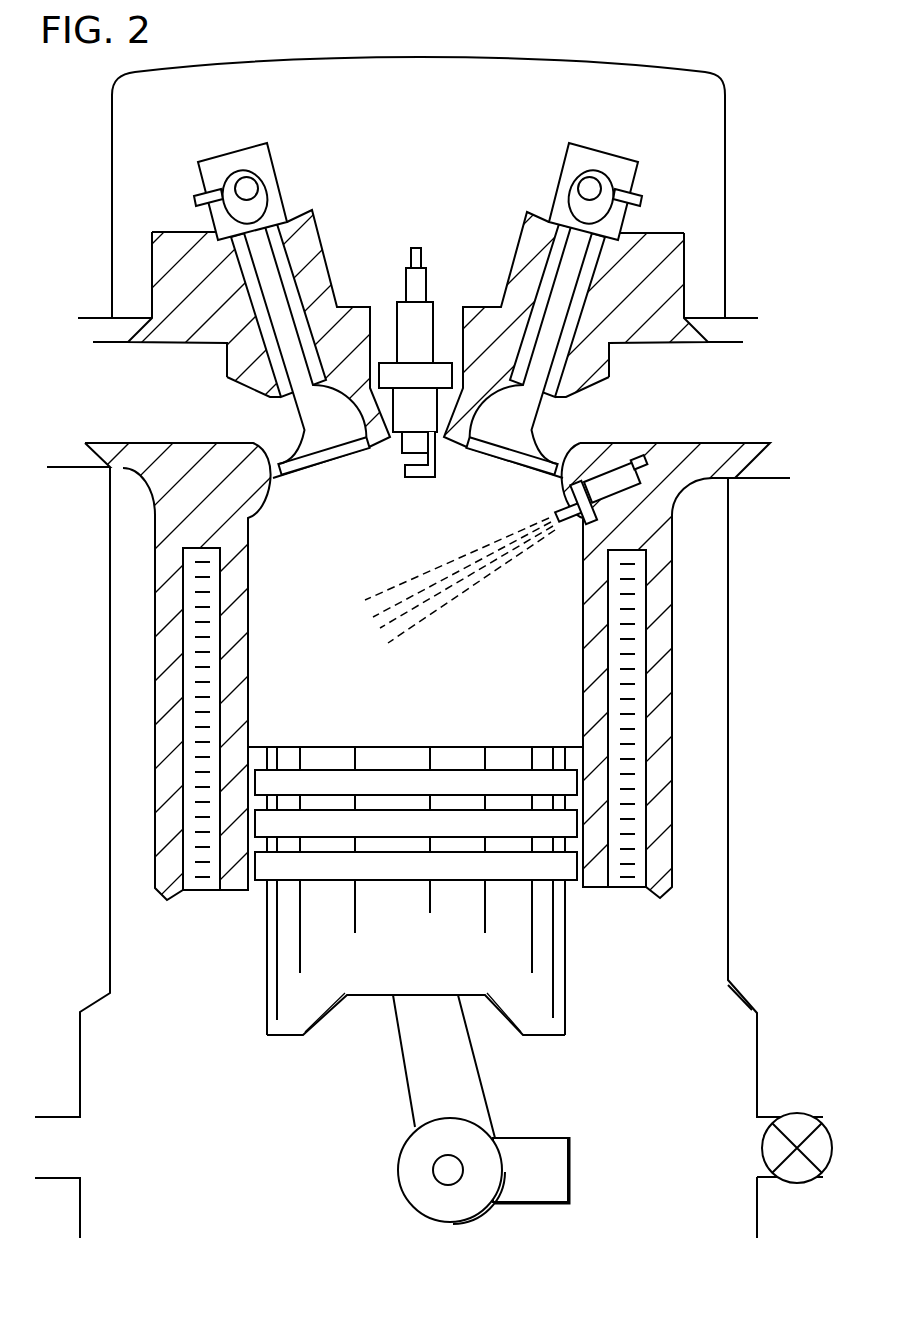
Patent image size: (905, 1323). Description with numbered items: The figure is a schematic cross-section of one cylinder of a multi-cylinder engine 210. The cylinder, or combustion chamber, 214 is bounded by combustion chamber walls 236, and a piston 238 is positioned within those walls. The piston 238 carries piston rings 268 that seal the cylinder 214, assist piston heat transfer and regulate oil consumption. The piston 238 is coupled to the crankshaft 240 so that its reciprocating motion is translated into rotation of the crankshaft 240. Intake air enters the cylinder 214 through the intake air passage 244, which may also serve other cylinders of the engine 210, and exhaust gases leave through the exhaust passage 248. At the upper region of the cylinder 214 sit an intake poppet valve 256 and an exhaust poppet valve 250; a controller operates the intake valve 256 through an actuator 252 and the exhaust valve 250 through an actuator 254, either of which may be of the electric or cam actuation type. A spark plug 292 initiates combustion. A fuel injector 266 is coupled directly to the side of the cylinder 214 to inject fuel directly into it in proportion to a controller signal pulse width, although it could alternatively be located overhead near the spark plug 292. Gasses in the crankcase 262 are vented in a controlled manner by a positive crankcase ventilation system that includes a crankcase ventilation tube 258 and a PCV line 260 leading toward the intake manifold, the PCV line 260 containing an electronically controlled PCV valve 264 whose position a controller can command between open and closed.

The engine 210 is at (733, 60).
The cylinder 214 is at (546, 708).
The combustion chamber walls 236 is at (248, 613).
The piston 238 is at (283, 1025).
The crankshaft 240 is at (400, 1185).
The intake air passage 244 is at (148, 409).
The exhaust passage 248 is at (709, 424).
The exhaust poppet valve 250 is at (527, 438).
The actuator 252 is at (247, 146).
The actuator 254 is at (590, 146).
The intake poppet valve 256 is at (302, 428).
The crankcase ventilation tube 258 is at (78, 1166).
The PCV line 260 is at (760, 1175).
The crankcase 262 is at (748, 1008).
The PCV valve 264 is at (790, 1114).
The fuel injector 266 is at (617, 493).
The piston rings 268 is at (254, 883).
The spark plug 292 is at (422, 287).